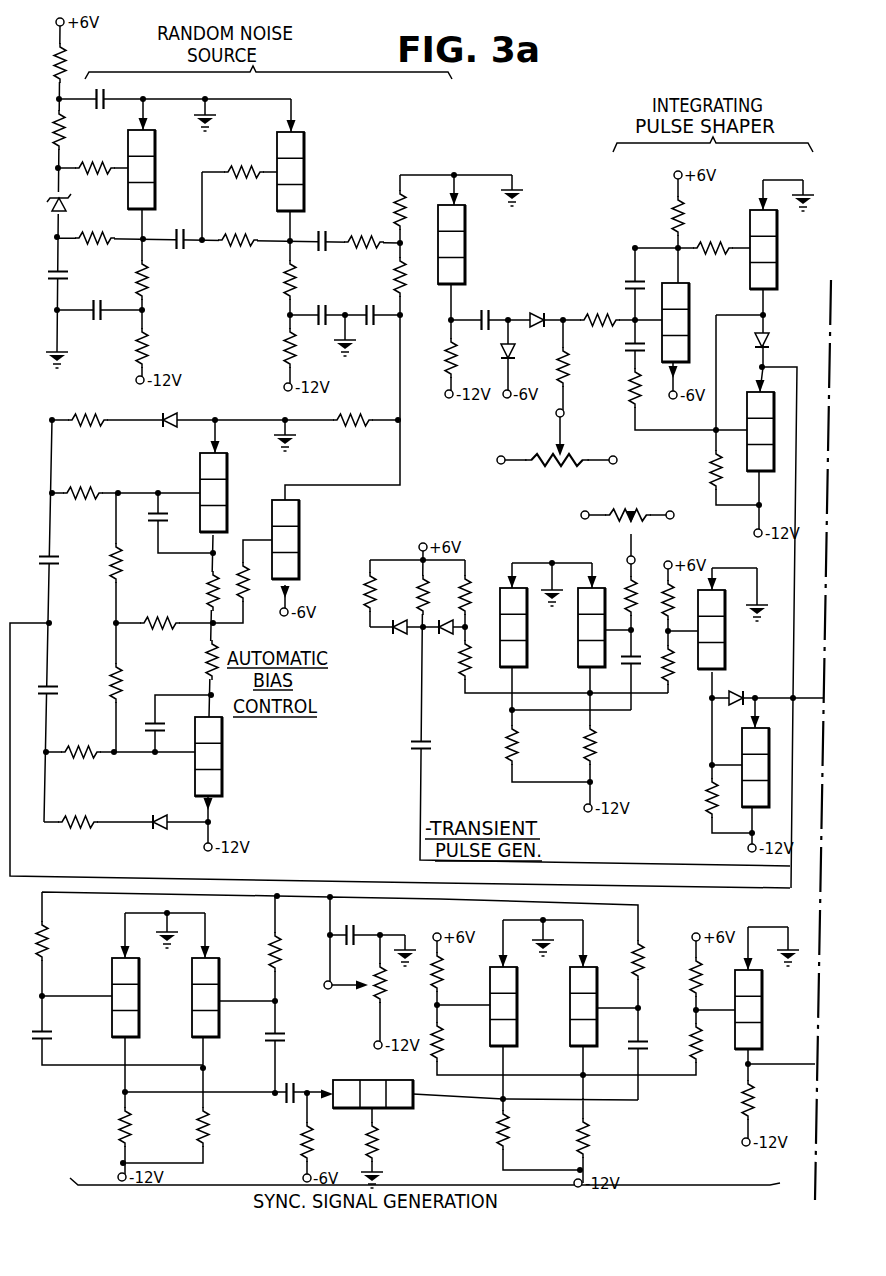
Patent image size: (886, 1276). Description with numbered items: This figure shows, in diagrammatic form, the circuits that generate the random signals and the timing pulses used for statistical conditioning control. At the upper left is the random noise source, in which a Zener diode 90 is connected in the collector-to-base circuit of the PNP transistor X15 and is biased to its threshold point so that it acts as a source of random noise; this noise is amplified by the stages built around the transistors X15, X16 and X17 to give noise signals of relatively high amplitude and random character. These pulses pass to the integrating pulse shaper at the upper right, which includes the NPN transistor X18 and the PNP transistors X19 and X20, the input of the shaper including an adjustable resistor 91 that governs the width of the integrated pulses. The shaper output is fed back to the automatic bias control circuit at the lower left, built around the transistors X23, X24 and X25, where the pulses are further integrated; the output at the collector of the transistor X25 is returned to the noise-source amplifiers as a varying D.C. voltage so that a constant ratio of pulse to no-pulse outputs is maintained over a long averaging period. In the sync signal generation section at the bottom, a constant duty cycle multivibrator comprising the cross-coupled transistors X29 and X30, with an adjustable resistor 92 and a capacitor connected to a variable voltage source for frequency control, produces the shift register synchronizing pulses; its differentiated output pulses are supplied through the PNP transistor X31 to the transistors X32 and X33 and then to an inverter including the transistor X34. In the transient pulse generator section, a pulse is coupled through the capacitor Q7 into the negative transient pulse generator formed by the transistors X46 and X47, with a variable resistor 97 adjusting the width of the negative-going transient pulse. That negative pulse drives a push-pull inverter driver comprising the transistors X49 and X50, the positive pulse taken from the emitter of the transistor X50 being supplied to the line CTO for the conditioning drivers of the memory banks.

The Zener diode 90 is at (66, 210).
The adjustable resistor 91 is at (574, 456).
The adjustable resistor 92 is at (356, 993).
The variable resistor 97 is at (628, 546).
The PNP transistor X15 is at (157, 175).
The transistor X16 is at (305, 176).
The transistor X17 is at (465, 263).
The NPN transistor X18 is at (688, 313).
The PNP transistor X19 is at (777, 265).
The PNP transistor X20 is at (773, 403).
The transistor X23 is at (228, 487).
The transistor X24 is at (222, 742).
The transistor X25 is at (299, 532).
The transistor X29 is at (112, 968).
The transistor X30 is at (219, 971).
The PNP transistor X31 is at (350, 1082).
The transistor X32 is at (490, 1034).
The transistor X33 is at (570, 1032).
The inverter transistor X34 is at (735, 1048).
The transistor X46 is at (526, 606).
The transistor X47 is at (578, 631).
The transistor X49 is at (699, 678).
The transistor X50 is at (742, 797).
The capacitor Q7 is at (424, 751).
The line CTO is at (774, 687).